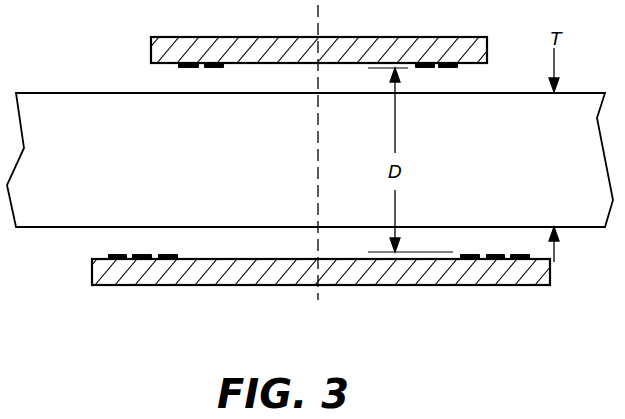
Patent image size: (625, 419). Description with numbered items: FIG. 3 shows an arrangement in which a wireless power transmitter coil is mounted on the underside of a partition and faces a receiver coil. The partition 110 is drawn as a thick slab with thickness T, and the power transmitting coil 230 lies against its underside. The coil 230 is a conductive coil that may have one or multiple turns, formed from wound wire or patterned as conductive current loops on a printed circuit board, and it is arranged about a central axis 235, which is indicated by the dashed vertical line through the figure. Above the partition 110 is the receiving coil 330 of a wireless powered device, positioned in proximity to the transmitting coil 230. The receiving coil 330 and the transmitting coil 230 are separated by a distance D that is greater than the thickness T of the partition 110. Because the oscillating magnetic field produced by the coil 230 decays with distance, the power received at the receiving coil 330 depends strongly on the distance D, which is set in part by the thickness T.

The partition 110 is at (73, 92).
The receiving coil 330 is at (188, 69).
The power transmitting coil 230 is at (108, 247).
The central axis 235 is at (320, 290).